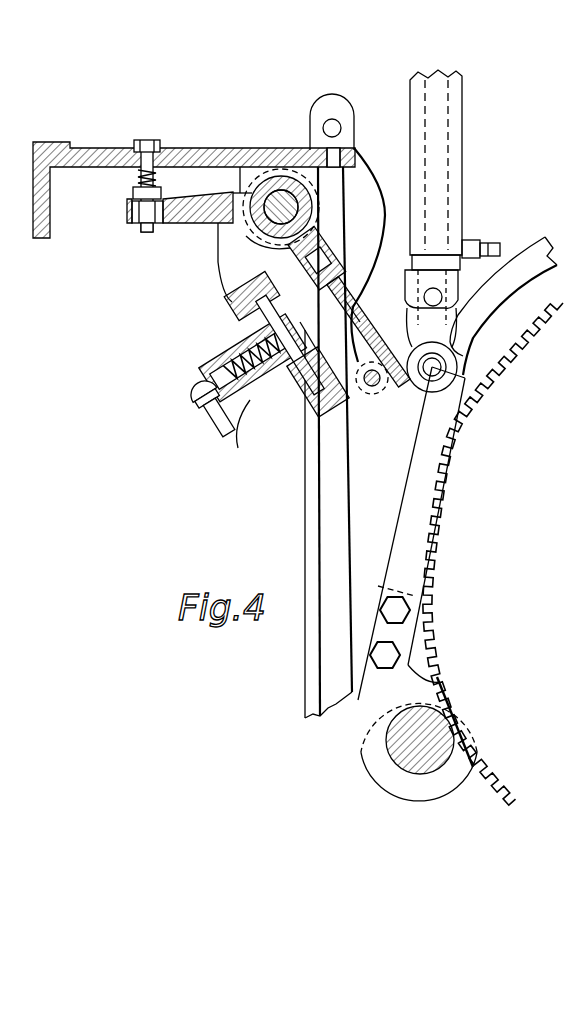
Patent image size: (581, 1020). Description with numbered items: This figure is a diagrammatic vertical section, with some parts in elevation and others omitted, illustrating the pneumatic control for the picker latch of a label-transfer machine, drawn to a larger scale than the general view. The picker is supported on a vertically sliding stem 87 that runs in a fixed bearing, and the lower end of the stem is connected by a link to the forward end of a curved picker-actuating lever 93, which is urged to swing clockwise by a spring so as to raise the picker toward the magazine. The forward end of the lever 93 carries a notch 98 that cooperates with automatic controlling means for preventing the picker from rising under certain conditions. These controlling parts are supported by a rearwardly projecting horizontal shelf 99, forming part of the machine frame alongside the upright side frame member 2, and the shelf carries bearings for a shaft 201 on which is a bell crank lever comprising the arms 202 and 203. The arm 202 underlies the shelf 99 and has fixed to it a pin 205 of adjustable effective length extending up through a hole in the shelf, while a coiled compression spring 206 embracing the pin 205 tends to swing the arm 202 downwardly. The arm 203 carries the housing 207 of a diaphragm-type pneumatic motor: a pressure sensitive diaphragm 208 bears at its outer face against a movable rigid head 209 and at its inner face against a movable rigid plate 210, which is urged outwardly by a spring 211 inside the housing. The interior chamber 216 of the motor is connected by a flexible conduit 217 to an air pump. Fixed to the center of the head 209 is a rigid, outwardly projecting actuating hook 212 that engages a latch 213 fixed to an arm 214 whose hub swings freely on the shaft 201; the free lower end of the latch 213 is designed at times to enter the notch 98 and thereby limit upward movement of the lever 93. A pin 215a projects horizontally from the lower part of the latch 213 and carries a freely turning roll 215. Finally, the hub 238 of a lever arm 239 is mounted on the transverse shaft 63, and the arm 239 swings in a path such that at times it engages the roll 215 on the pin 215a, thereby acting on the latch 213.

The side frame member 2 is at (314, 539).
The transverse shaft 63 is at (407, 758).
The vertically sliding stem 87 is at (456, 167).
The curved picker-actuating lever 93 is at (527, 252).
The notch 98 is at (425, 400).
The horizontal shelf 99 is at (208, 153).
The shaft 201 is at (278, 196).
The arm 202 is at (213, 218).
The arm 203 is at (227, 273).
The pin 205 is at (146, 230).
The coiled compression spring 206 is at (137, 176).
The housing 207 is at (320, 408).
The pressure sensitive diaphragm 208 is at (262, 290).
The movable rigid head 209 is at (311, 337).
The movable rigid plate 210 is at (308, 385).
The spring 211 is at (223, 436).
The actuating hook 212 is at (349, 320).
The latch 213 is at (357, 343).
The arm 214 is at (310, 256).
The roll 215 is at (408, 388).
The pin 215a is at (368, 383).
The interior chamber 216 is at (257, 318).
The flexible conduit 217 is at (216, 430).
The hub 238 is at (380, 764).
The lever arm 239 is at (418, 522).